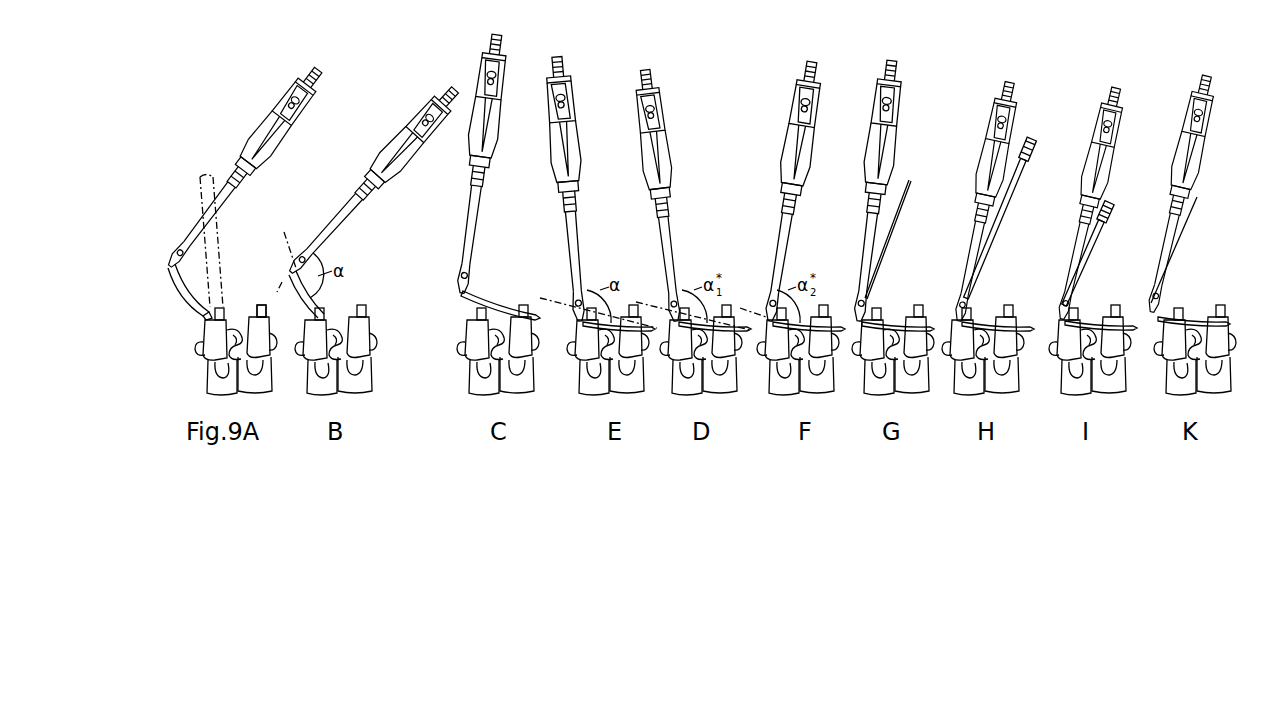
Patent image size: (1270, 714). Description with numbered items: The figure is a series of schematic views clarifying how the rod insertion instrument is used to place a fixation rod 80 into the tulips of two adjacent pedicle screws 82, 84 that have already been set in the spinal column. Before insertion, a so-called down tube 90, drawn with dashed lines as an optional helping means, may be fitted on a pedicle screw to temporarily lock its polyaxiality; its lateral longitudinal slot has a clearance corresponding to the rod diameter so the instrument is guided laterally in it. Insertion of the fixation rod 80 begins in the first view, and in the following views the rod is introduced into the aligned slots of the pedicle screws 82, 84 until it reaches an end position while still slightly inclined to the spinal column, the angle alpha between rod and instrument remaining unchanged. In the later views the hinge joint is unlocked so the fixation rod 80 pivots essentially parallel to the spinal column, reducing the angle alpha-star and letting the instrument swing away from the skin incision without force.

The fixation rod 80 is at (183, 293).
The pedicle screw 82 is at (207, 317).
The pedicle screw 84 is at (260, 304).
The down tube 90 is at (200, 193).